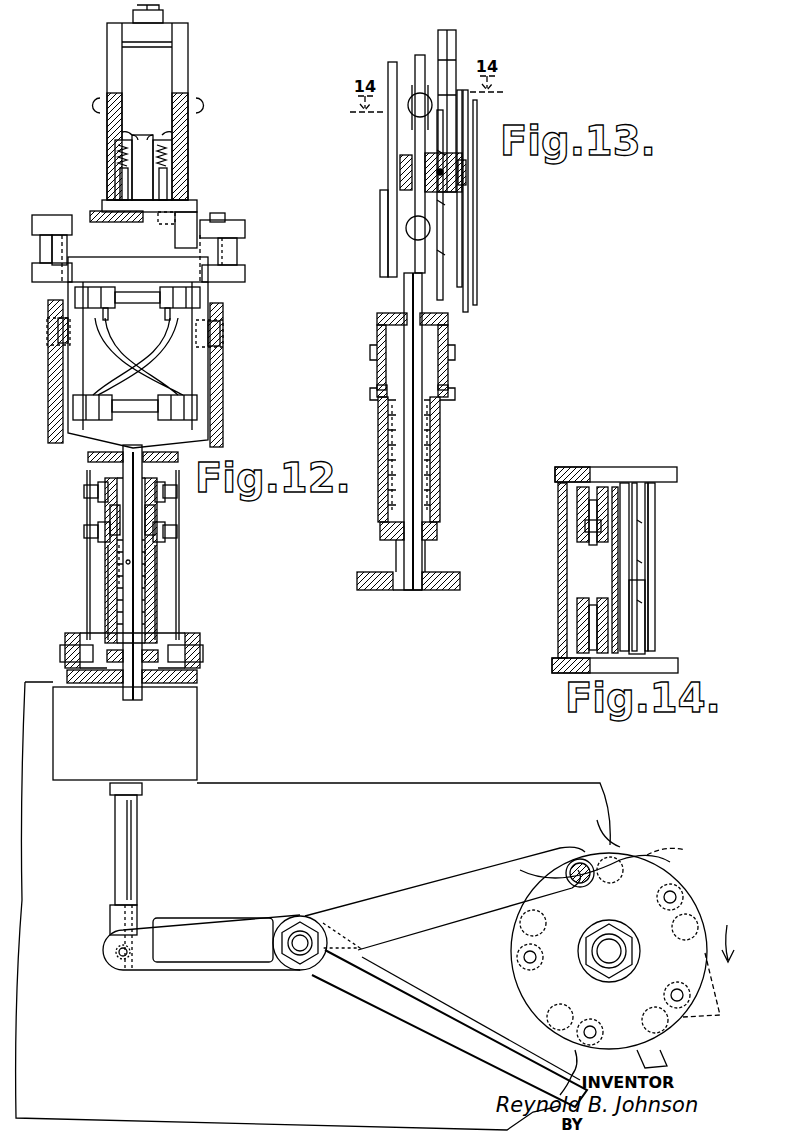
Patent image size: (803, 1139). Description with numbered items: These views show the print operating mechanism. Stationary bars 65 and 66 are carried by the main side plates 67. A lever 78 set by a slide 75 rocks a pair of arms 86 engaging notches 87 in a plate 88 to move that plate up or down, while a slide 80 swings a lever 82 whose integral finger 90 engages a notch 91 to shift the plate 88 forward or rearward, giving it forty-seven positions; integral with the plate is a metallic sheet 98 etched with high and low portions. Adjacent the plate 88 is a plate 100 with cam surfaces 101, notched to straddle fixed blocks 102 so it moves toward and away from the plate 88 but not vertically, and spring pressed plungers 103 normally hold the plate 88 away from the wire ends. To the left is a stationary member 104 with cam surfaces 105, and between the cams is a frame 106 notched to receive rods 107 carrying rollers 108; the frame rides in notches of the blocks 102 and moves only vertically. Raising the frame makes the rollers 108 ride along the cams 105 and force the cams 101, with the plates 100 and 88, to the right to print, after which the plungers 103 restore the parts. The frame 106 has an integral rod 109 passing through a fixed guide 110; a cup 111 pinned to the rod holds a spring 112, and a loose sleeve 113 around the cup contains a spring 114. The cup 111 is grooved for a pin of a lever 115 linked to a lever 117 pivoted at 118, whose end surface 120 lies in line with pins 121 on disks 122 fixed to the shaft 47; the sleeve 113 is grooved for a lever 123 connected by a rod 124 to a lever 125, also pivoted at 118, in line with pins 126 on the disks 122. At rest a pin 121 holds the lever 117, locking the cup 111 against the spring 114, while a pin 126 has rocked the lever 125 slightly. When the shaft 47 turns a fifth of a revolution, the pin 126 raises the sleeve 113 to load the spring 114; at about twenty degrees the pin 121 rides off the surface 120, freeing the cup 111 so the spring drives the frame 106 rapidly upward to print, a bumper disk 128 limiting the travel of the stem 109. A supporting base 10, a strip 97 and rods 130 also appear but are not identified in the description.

In FIG. 12, the machine frame 10 is at (197, 740).
In FIG. 12, the shaft 47 is at (609, 951).
In FIG. 12, the stationary bar 65 is at (188, 135).
In FIG. 12, the stationary bar 66 is at (107, 130).
In FIG. 12, the main side plates 67 is at (178, 62).
In FIG. 12, the slide 75 is at (178, 157).
In FIG. 12, the lever 78 is at (172, 170).
In FIG. 12, the slide 80 is at (121, 150).
In FIG. 12, the lever 82 is at (120, 183).
In FIG. 12, the arms 86 is at (262, 275).
In FIG. 12, the notches 87 is at (237, 250).
In FIG. 12, the plate 88 is at (88, 245).
In FIG. 13, the plate 88 is at (456, 50).
In FIG. 14, the plate 88 is at (655, 565).
In FIG. 12, the finger 90 is at (190, 240).
In FIG. 12, the notch 91 is at (185, 245).
In FIG. 13, the contact strip 97 is at (477, 305).
In FIG. 14, the contact strip 97 is at (640, 643).
In FIG. 13, the metallic sheet 98 is at (462, 245).
In FIG. 14, the metallic sheet 98 is at (648, 540).
In FIG. 13, the plate 100 is at (443, 150).
In FIG. 12, the cam surfaces 101 is at (85, 430).
In FIG. 13, the cam surfaces 101 is at (495, 220).
In FIG. 14, the cam surfaces 101 is at (615, 600).
In FIG. 12, the fixed blocks 102 is at (248, 335).
In FIG. 13, the fixed blocks 102 is at (462, 170).
In FIG. 14, the fixed blocks 102 is at (560, 665).
In FIG. 13, the spring pressed plungers 103 is at (468, 280).
In FIG. 14, the spring pressed plungers 103 is at (680, 605).
In FIG. 13, the stationary member 104 is at (392, 172).
In FIG. 14, the stationary member 104 is at (622, 595).
In FIG. 13, the cam surfaces 105 is at (408, 232).
In FIG. 14, the cam surfaces 105 is at (575, 505).
In FIG. 12, the frame 106 is at (200, 385).
In FIG. 13, the frame 106 is at (385, 205).
In FIG. 14, the frame 106 is at (685, 462).
In FIG. 12, the rods 107 is at (130, 300).
In FIG. 14, the rods 107 is at (590, 530).
In FIG. 12, the rollers 108 is at (120, 360).
In FIG. 13, the rollers 108 is at (470, 330).
In FIG. 14, the rollers 108 is at (578, 640).
In FIG. 12, the rod 109 is at (133, 562).
In FIG. 13, the rod 109 is at (408, 445).
In FIG. 12, the fixed guide 110 is at (88, 460).
In FIG. 13, the fixed guide 110 is at (390, 315).
In FIG. 12, the cup 111 is at (157, 513).
In FIG. 13, the cup 111 is at (440, 365).
In FIG. 12, the spring 112 is at (108, 517).
In FIG. 13, the spring 112 is at (440, 385).
In FIG. 12, the sleeve 113 is at (157, 583).
In FIG. 13, the sleeve 113 is at (440, 480).
In FIG. 12, the spring 114 is at (150, 605).
In FIG. 13, the spring 114 is at (430, 497).
In FIG. 12, the lever 115 is at (95, 500).
In FIG. 12, the lever 117 is at (377, 1005).
In FIG. 12, the pivot 118 is at (302, 940).
In FIG. 12, the surface 120 is at (600, 1048).
In FIG. 12, the pins 121 is at (690, 941).
In FIG. 12, the disks 122 is at (660, 875).
In FIG. 12, the lever 123 is at (105, 540).
In FIG. 12, the rod 124 is at (125, 833).
In FIG. 12, the lever 125 is at (410, 880).
In FIG. 12, the pins 126 is at (595, 1028).
In FIG. 12, the bumper disk 128 is at (158, 660).
In FIG. 13, the bumper disk 128 is at (437, 532).
In FIG. 12, the tie rods 130 is at (190, 600).